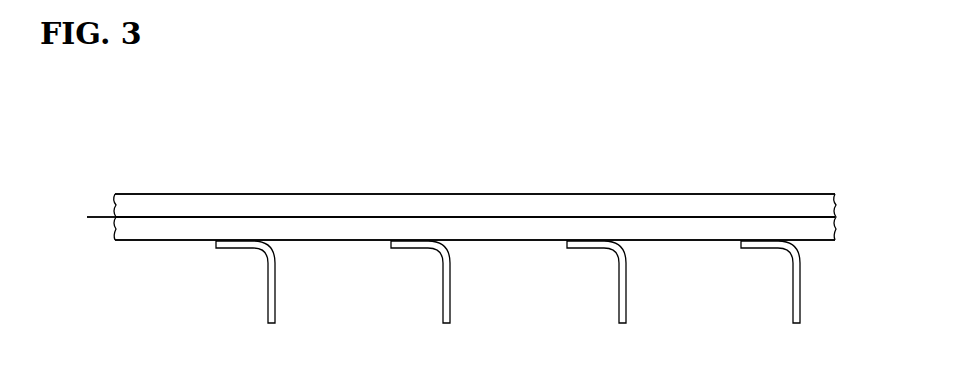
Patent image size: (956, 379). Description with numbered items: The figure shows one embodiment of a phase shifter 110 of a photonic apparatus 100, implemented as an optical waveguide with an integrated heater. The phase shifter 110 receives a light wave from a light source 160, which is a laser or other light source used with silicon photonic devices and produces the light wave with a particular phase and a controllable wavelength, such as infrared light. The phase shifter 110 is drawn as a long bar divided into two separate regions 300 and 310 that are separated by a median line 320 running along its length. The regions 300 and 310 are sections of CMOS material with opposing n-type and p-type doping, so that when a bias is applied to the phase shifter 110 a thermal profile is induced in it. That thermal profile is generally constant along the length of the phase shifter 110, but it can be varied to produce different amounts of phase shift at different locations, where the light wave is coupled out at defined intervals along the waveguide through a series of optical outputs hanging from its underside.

The photonic apparatus 100 is at (200, 126).
The phase shifter 110 is at (118, 193).
The light source 160 is at (74, 229).
The region 300 is at (407, 209).
The region 310 is at (177, 226).
The median line 320 is at (128, 218).